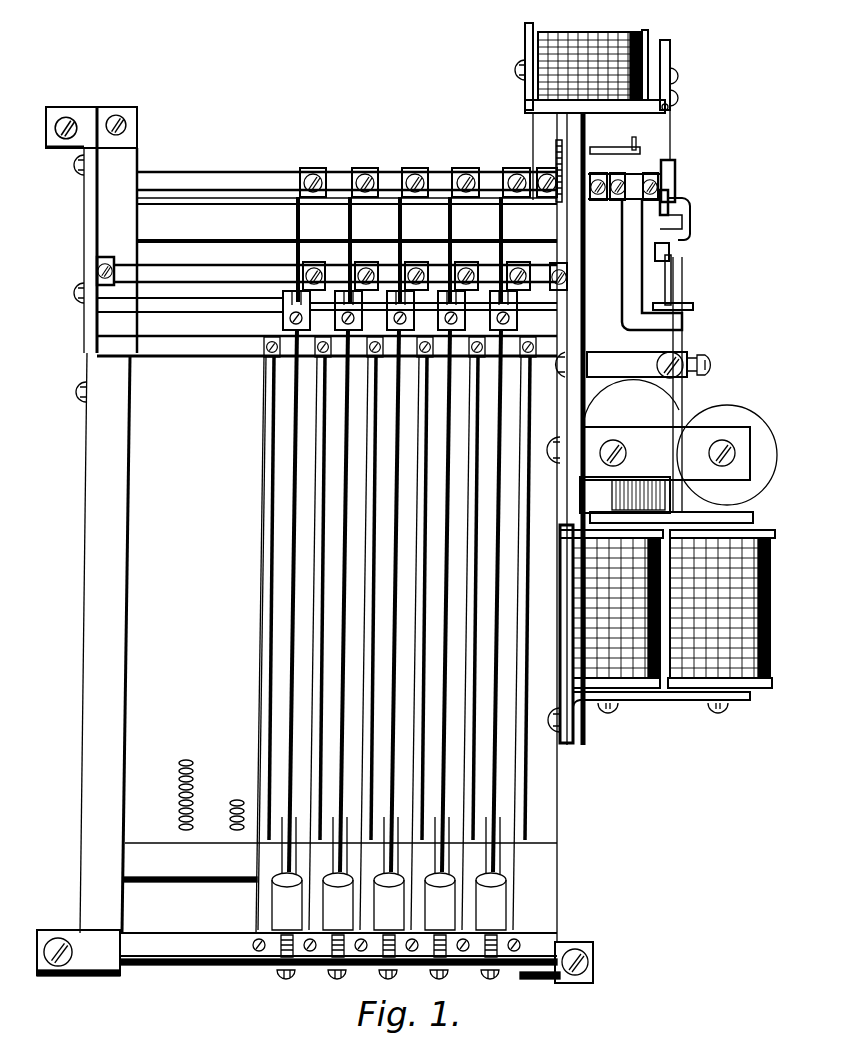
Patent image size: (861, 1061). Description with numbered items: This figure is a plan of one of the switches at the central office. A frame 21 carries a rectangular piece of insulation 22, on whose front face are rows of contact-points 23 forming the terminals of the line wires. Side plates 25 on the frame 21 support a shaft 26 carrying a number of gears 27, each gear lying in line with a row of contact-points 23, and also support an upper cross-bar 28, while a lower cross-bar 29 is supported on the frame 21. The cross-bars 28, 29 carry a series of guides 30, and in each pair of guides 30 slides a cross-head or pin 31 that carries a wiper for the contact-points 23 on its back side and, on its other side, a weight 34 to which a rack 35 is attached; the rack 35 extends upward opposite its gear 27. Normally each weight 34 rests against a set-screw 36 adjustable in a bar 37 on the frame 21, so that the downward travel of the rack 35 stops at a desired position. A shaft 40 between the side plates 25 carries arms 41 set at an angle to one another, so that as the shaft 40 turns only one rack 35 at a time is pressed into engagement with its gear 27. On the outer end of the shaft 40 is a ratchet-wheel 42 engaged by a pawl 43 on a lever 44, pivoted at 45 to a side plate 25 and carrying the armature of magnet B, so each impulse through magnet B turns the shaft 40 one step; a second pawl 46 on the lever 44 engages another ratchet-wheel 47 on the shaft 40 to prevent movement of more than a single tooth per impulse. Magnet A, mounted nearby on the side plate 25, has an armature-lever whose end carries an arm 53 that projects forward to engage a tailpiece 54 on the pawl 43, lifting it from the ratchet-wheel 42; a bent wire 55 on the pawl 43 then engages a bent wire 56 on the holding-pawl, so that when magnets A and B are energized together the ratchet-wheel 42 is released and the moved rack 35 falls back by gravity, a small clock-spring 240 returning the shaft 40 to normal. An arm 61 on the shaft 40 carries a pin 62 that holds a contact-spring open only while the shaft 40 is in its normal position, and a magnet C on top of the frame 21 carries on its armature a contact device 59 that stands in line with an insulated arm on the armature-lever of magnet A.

The frame 21 is at (84, 725).
The rectangular piece of insulation 22 is at (340, 645).
The contact-points 23 is at (238, 803).
The side plates 25 is at (86, 224).
The shaft 26 is at (232, 269).
The gears 27 is at (371, 264).
The cross-bar 28 is at (205, 358).
The cross-bar 29 is at (178, 932).
The guides 30 is at (264, 548).
The cross-head or pin 31 is at (505, 925).
The weight 34 is at (497, 897).
The rack 35 is at (292, 657).
The set-screws 36 is at (280, 981).
The bar 37 is at (195, 967).
The shaft 40 is at (258, 177).
The arms 41 is at (452, 220).
The ratchet-wheel 42 is at (686, 226).
The pawl 43 is at (672, 250).
The lever 44 is at (684, 397).
The pivot 45 is at (588, 491).
The pawl 46 is at (626, 240).
The ratchet-wheel 47 is at (633, 165).
The arm 53 is at (690, 312).
The tailpiece 54 is at (672, 290).
The bent wire 55 is at (692, 212).
The bent wire 56 is at (688, 194).
The contact device 59 is at (672, 130).
The arm 61 is at (596, 201).
The pin 62 is at (615, 136).
The clock-spring 240 is at (555, 151).
The magnet A is at (752, 416).
The magnet B is at (770, 573).
The magnet C is at (596, 58).